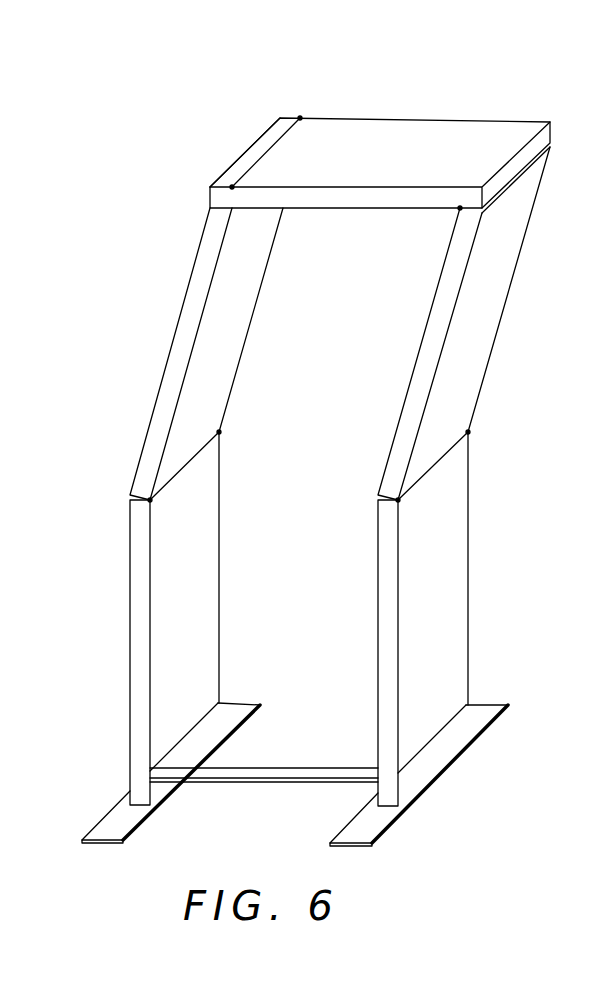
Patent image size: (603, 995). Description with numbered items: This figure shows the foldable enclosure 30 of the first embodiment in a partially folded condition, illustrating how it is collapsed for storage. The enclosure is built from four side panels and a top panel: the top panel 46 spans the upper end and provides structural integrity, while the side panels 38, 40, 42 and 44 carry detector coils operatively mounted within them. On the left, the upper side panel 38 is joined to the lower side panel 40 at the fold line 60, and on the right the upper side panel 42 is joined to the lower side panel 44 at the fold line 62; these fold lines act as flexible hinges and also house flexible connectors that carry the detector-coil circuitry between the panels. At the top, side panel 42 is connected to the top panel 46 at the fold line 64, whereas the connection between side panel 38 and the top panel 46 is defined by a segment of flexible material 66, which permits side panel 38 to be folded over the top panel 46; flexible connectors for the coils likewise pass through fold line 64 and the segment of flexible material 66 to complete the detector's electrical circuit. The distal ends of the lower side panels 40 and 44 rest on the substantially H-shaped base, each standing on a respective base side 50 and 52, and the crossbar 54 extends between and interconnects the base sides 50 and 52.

The foldable enclosure 30 is at (409, 75).
The top panel 46 is at (380, 163).
The segment of flexible material 66 is at (237, 171).
The fold line 64 is at (460, 209).
The side panel 38 is at (206, 354).
The side panel 42 is at (483, 316).
The fold line 60 is at (188, 464).
The fold line 62 is at (425, 479).
The side panel 40 is at (164, 652).
The side panel 44 is at (413, 653).
The base side 50 is at (105, 832).
The base side 52 is at (368, 826).
The crossbar 54 is at (270, 770).